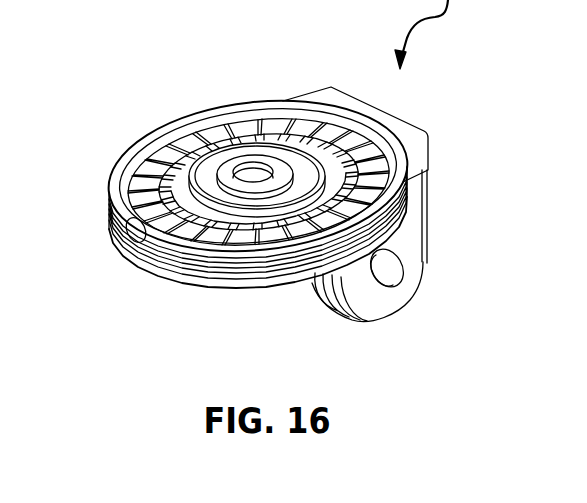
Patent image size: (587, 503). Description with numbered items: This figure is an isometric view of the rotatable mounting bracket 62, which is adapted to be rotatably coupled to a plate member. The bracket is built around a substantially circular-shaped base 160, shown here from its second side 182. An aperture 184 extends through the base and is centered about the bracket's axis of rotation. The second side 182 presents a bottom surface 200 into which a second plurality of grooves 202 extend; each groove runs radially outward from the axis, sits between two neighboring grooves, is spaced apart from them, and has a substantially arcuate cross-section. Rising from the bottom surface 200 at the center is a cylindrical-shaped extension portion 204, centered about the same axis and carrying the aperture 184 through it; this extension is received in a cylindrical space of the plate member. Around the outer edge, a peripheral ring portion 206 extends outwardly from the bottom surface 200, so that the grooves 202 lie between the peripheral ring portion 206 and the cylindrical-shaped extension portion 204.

The substantially circular-shaped base 160 is at (193, 284).
The second side 182 is at (268, 118).
The aperture 184 is at (232, 181).
The bottom surface 200 is at (232, 122).
The second plurality of grooves 202 is at (210, 243).
The cylindrical-shaped extension portion 204 is at (293, 170).
The peripheral ring portion 206 is at (140, 232).
The rotatable mounting bracket 62 is at (0, 492).